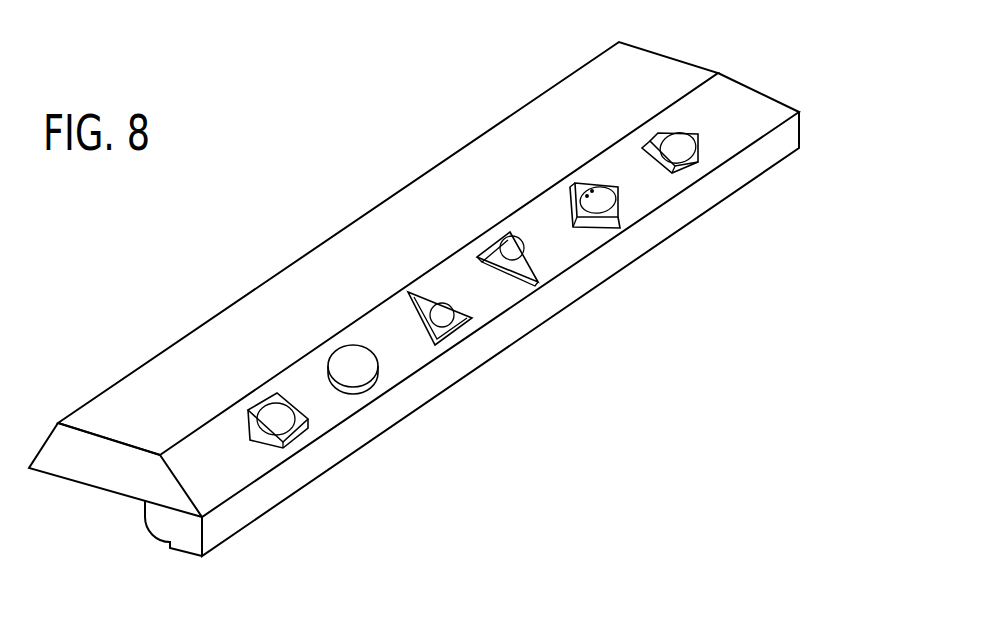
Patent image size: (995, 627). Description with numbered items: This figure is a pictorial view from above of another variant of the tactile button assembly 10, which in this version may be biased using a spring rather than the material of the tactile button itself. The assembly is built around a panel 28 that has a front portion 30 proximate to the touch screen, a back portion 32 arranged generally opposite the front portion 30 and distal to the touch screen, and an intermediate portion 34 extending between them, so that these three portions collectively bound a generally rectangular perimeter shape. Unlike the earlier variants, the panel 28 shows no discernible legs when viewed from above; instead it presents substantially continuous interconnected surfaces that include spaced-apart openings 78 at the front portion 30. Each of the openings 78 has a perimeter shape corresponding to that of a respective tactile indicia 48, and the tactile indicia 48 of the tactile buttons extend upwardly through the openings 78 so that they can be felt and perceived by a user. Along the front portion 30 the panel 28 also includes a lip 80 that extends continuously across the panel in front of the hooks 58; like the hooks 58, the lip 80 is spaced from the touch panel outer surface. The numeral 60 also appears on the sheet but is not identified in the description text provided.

The tactile button assembly 10 is at (319, 120).
The panel 28 is at (663, 50).
The front portion 30 is at (185, 556).
The back portion 32 is at (70, 443).
The intermediate portion 34 is at (108, 467).
The tactile indicia 48 is at (277, 417).
The openings 78 is at (302, 436).
The lip 80 is at (512, 329).
The hooks 58 is at (725, 621).
The lens element 60 is at (565, 626).